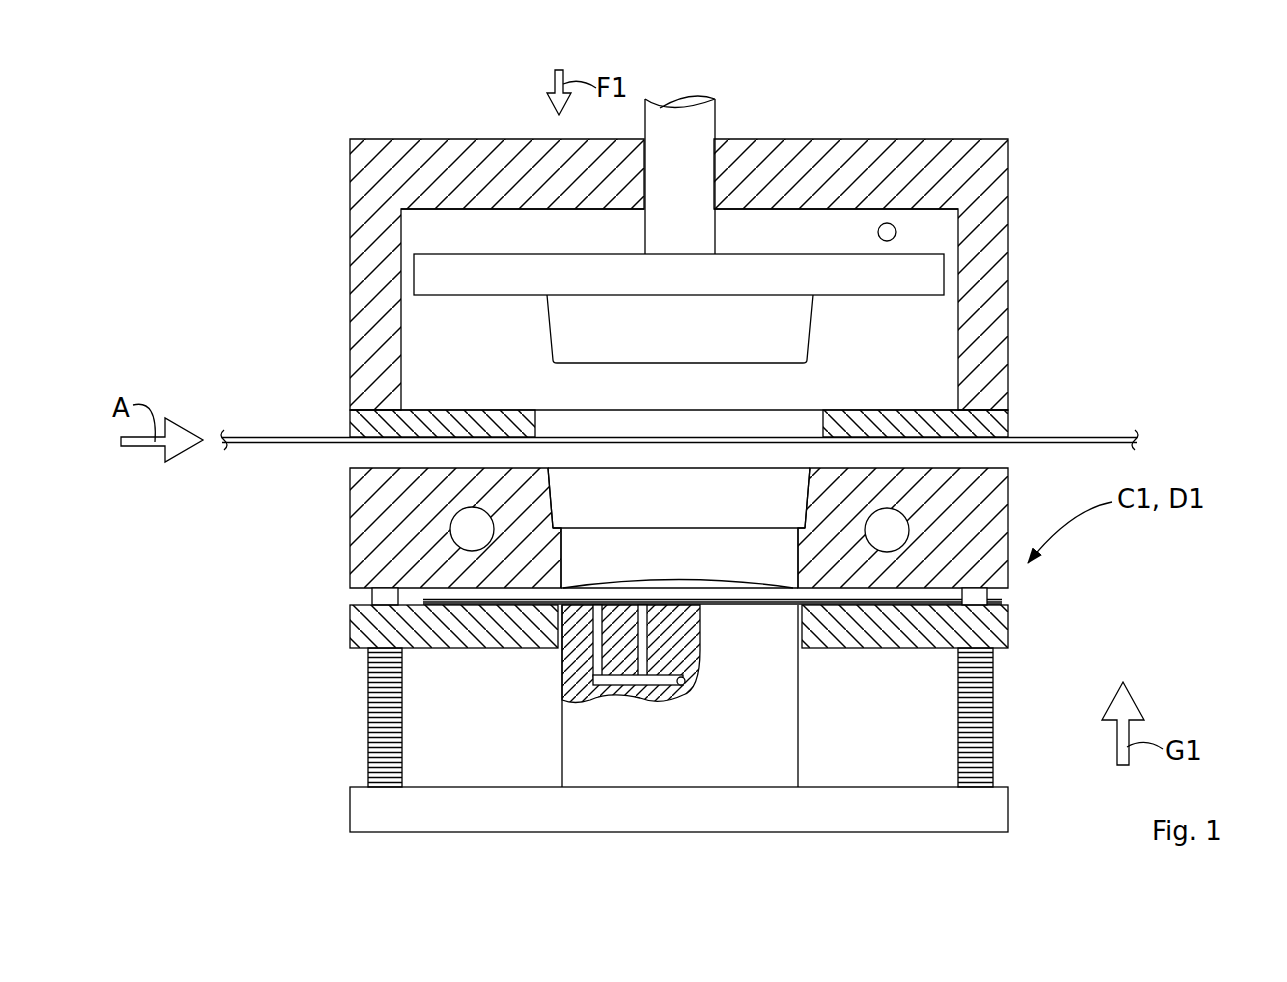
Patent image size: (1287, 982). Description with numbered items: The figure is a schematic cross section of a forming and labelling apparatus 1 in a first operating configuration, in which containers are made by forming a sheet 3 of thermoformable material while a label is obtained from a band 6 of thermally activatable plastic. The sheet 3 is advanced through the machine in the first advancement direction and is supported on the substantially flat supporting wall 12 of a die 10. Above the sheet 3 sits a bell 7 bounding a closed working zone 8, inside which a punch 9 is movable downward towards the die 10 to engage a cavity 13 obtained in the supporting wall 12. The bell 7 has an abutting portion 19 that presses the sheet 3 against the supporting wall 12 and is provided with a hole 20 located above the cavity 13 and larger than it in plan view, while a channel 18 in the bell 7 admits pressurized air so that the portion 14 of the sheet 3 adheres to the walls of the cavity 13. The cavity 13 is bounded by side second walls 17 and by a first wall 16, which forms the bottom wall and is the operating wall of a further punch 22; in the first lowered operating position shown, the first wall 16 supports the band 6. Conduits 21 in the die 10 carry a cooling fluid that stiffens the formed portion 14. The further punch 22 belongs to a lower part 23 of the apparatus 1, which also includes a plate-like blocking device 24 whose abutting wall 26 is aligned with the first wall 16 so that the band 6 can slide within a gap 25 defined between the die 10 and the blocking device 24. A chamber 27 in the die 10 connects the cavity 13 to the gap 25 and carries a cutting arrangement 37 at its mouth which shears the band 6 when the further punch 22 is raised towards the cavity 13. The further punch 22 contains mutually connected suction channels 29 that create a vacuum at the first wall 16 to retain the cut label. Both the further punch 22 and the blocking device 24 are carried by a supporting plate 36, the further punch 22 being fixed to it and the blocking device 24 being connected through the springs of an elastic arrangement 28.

The forming and labelling apparatus 1 is at (253, 135).
The sheet 3 is at (1090, 440).
The band 6 is at (585, 600).
The bell 7 is at (358, 190).
The working zone 8 is at (504, 246).
The punch 9 is at (567, 333).
The die 10 is at (305, 515).
The supporting wall 12 is at (355, 425).
The cavity 13 is at (700, 506).
The portion of the sheet 14 is at (680, 435).
The first wall 16 is at (716, 608).
The second walls 17 is at (553, 497).
The channel 18 is at (892, 229).
The abutting portion 19 is at (1024, 421).
The hole 20 is at (823, 410).
The conduits 21 is at (472, 530).
The further punch 22 is at (752, 731).
The lower part 23 is at (230, 700).
The blocking device 24 is at (357, 624).
The gap 25 is at (877, 599).
The abutting wall 26 is at (1002, 601).
The chamber 27 is at (692, 566).
The elastic arrangement 28 is at (382, 705).
The suction channels 29 is at (641, 665).
The supporting plate 36 is at (373, 812).
The cutting arrangement 37 is at (623, 583).